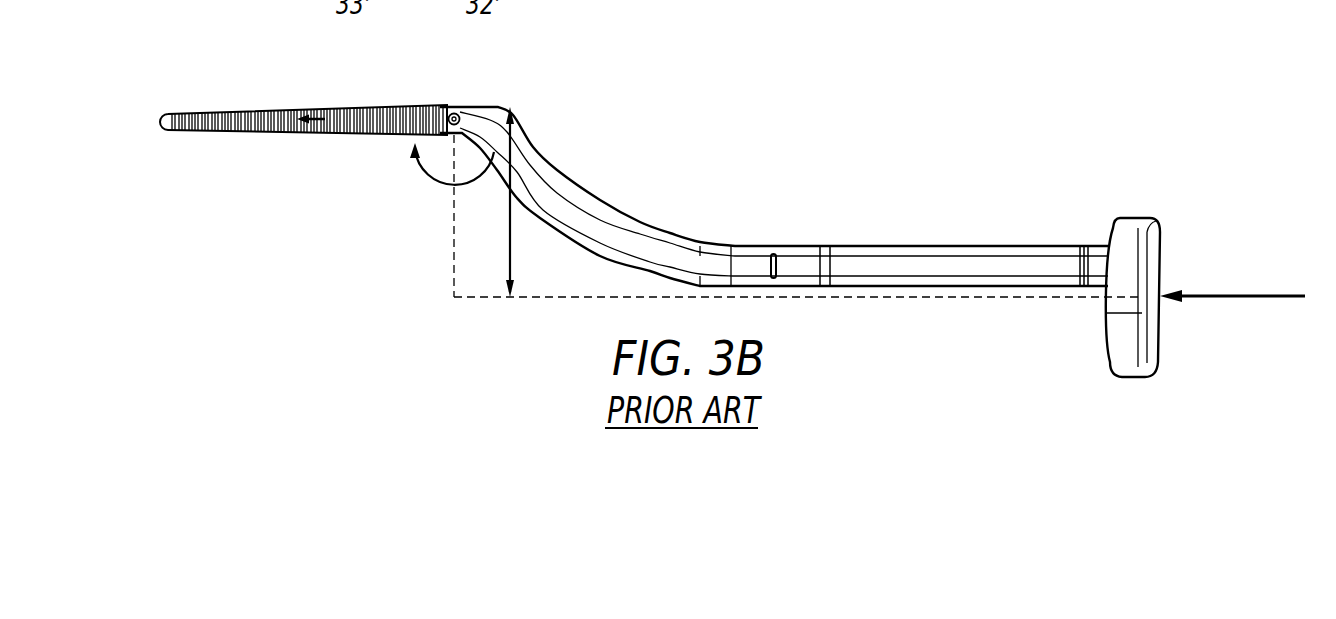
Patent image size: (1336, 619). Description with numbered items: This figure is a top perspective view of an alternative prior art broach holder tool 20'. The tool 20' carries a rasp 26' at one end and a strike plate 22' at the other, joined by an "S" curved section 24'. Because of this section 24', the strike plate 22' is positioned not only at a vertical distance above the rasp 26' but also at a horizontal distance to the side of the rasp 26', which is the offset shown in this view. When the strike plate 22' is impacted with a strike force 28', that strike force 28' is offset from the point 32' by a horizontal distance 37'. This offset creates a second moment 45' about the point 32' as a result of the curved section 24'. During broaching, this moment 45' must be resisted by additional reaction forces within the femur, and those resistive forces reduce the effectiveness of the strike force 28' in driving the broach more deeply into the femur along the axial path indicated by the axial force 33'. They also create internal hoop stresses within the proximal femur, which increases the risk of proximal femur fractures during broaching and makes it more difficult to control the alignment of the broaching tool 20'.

The broach holder tool 20' is at (933, 76).
The strike plate 22' is at (1119, 267).
The section 24' is at (774, 196).
The rasp 26' is at (298, 81).
The strike force 28' is at (1232, 255).
The point 32' is at (470, 85).
The axial force 33' is at (307, 154).
The horizontal distance 37' is at (798, 202).
The second moment 45' is at (444, 206).